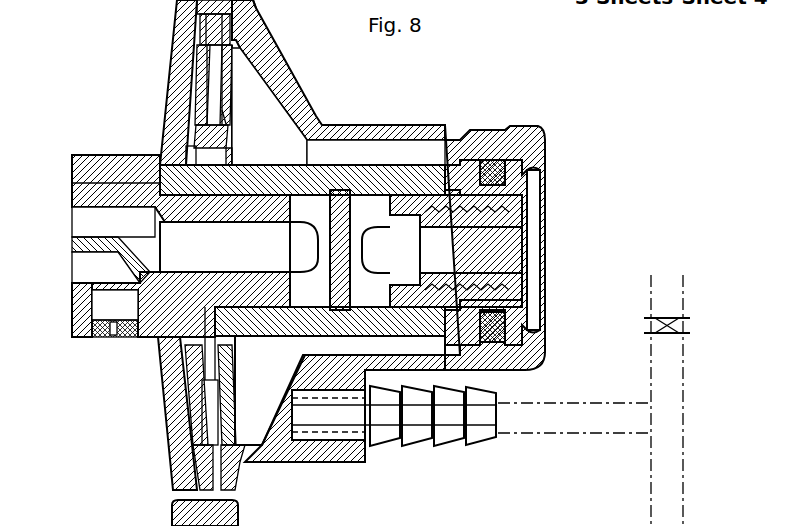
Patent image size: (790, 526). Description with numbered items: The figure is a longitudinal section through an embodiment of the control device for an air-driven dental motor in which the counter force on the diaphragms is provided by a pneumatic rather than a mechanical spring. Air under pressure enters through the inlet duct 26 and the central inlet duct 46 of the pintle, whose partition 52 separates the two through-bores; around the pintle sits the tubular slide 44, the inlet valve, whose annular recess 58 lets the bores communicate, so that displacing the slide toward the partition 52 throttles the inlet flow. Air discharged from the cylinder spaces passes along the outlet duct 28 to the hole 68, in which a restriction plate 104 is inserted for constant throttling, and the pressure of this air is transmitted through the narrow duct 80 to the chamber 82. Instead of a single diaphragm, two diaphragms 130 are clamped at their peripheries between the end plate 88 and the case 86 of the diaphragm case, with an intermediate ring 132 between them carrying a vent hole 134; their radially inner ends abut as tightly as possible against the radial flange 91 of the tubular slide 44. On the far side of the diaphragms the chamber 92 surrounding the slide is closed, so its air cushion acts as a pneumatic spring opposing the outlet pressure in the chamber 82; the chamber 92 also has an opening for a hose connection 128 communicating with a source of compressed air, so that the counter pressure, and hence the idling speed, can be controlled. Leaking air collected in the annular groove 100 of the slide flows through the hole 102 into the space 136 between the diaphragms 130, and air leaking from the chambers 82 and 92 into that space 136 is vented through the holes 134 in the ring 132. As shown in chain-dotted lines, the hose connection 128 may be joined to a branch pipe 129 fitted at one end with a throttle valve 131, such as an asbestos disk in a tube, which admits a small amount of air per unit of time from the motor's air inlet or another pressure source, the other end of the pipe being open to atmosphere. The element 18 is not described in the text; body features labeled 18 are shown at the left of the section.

The flange body 18 is at (74, 195).
The inlet duct 26 is at (113, 222).
The outlet duct 28 is at (111, 260).
The tubular slide 44 is at (266, 178).
The central inlet duct 46 is at (225, 247).
The partition 52 is at (331, 222).
The annular recess 58 is at (332, 167).
The hole 68 is at (102, 297).
The narrow duct 80 is at (150, 340).
The chamber 82 is at (183, 113).
The case 86 is at (281, 70).
The end plate 88 is at (186, 22).
The radial flange 91 is at (226, 112).
The chamber 92 is at (269, 106).
The annular groove 100 is at (229, 166).
The hole 102 is at (228, 340).
The restriction plate 104 is at (100, 340).
The hose connection 128 is at (455, 430).
The branch pipe 129 is at (682, 485).
The diaphragms 130 is at (200, 80).
The throttle valve 131 is at (662, 326).
The intermediate ring 132 is at (244, 30).
The vent hole 134 is at (256, 10).
The space 136 is at (216, 412).